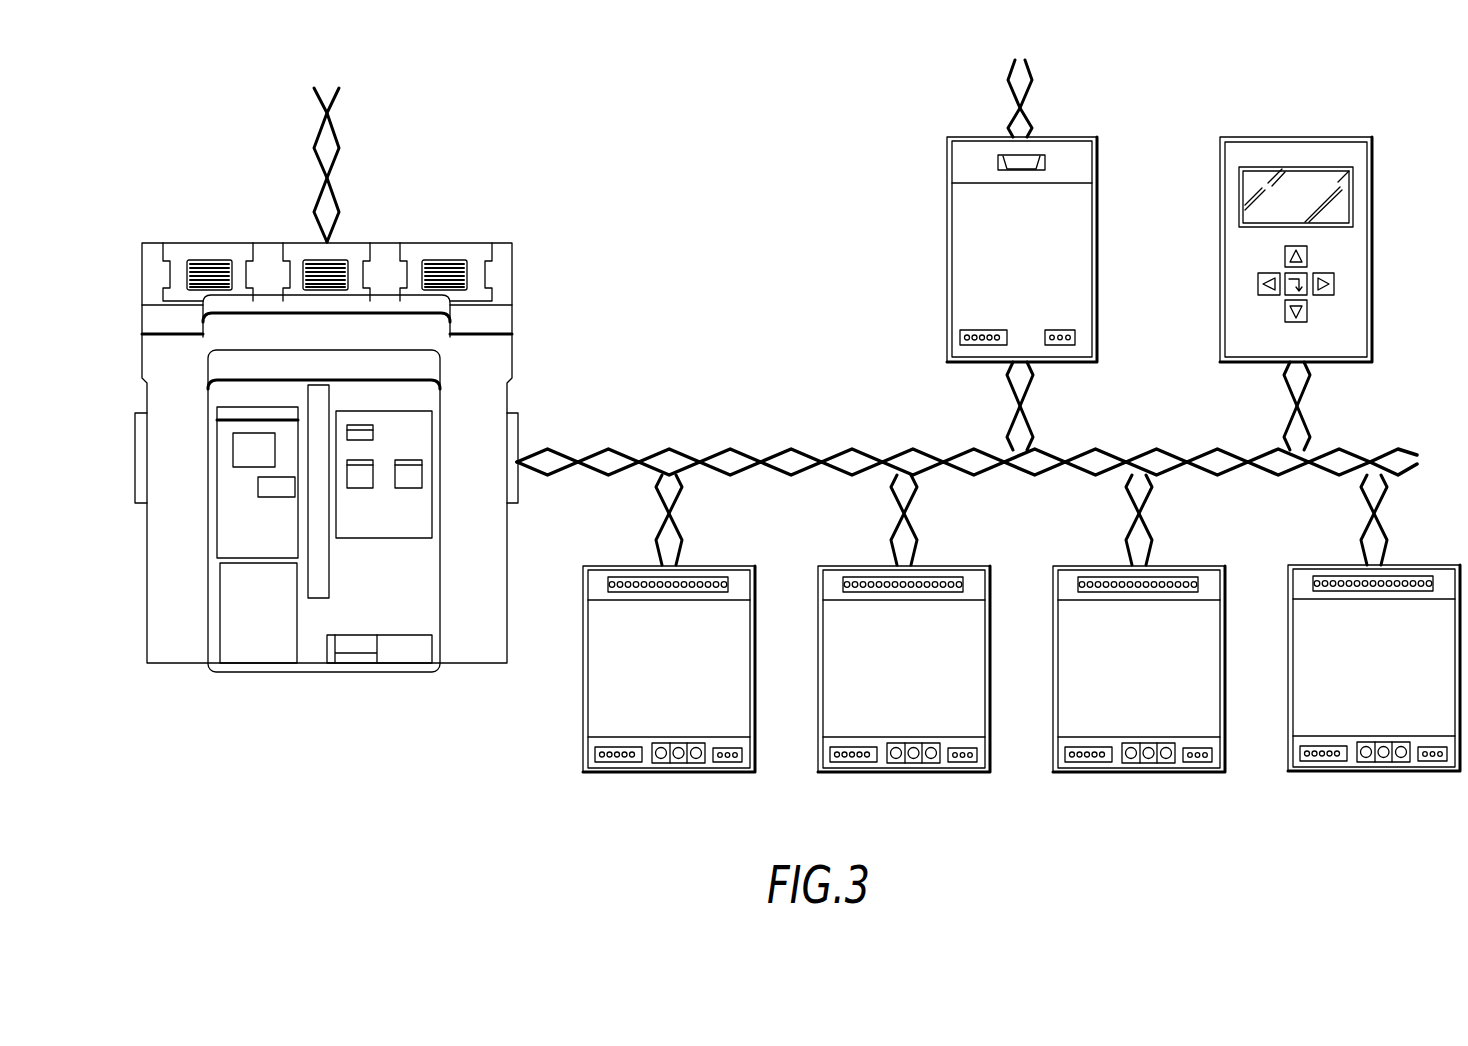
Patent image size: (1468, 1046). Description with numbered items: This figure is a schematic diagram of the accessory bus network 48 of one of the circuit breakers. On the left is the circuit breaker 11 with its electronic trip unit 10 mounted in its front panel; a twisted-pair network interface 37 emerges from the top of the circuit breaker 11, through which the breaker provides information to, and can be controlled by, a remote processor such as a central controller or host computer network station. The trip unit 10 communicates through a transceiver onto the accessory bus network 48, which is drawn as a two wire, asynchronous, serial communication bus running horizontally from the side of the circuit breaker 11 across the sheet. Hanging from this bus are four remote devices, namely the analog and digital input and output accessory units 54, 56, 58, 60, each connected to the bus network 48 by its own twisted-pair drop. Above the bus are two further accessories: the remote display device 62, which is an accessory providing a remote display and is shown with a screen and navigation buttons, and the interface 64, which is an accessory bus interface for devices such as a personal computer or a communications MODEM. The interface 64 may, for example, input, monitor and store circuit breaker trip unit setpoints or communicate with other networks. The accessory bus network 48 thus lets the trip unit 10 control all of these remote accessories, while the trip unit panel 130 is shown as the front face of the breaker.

The electronic trip unit 10 is at (394, 610).
The circuit breaker 11 is at (357, 401).
The network interface 37 is at (304, 126).
The accessory bus network 48 is at (769, 438).
The analog and digital input and output accessory unit 54 is at (686, 773).
The analog and digital input and output accessory unit 56 is at (921, 773).
The analog and digital input and output accessory unit 58 is at (1156, 773).
The analog and digital input and output accessory unit 60 is at (1391, 772).
The remote display device 62 is at (1219, 238).
The interface 64 is at (946, 238).
The trip unit 130 is at (391, 526).